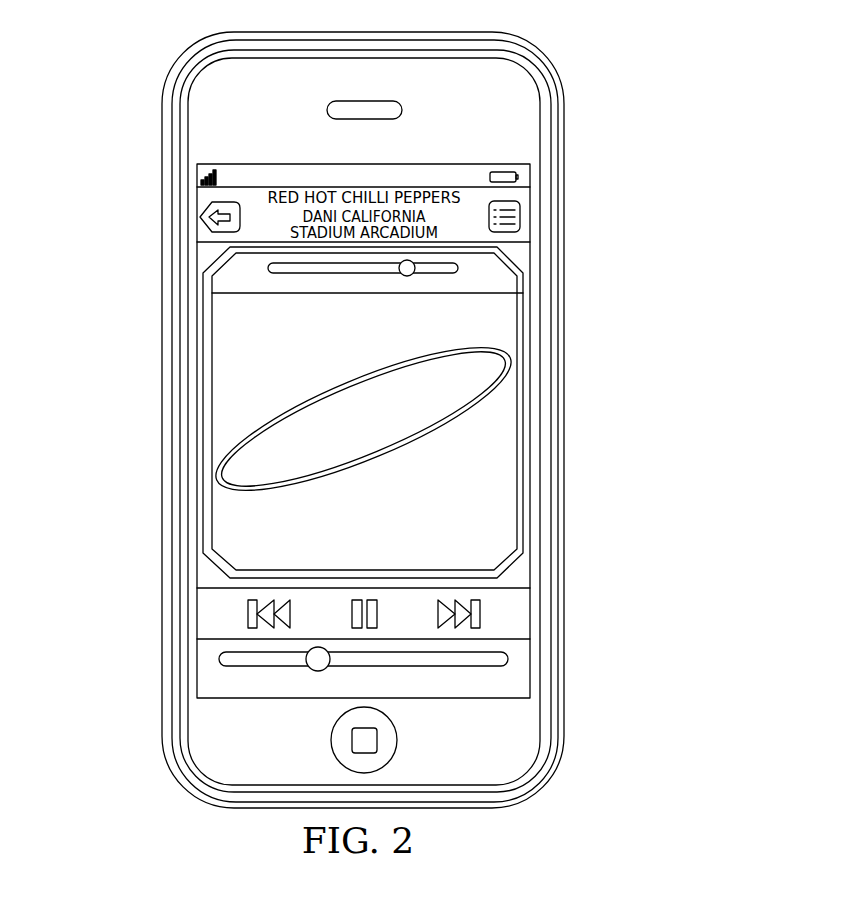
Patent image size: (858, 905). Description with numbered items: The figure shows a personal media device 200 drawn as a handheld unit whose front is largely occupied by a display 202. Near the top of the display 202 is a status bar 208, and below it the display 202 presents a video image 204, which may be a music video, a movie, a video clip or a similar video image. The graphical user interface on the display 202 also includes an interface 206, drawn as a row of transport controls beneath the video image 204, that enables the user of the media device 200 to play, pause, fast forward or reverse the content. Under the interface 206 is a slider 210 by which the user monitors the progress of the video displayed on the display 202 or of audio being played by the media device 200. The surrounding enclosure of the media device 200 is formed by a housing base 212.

The personal media device 200 is at (506, 422).
The display 202 is at (365, 412).
The video image 204 is at (507, 320).
The interface 206 is at (523, 607).
The status bar 208 is at (235, 173).
The slider 210 is at (507, 658).
The housing base 212 is at (552, 780).